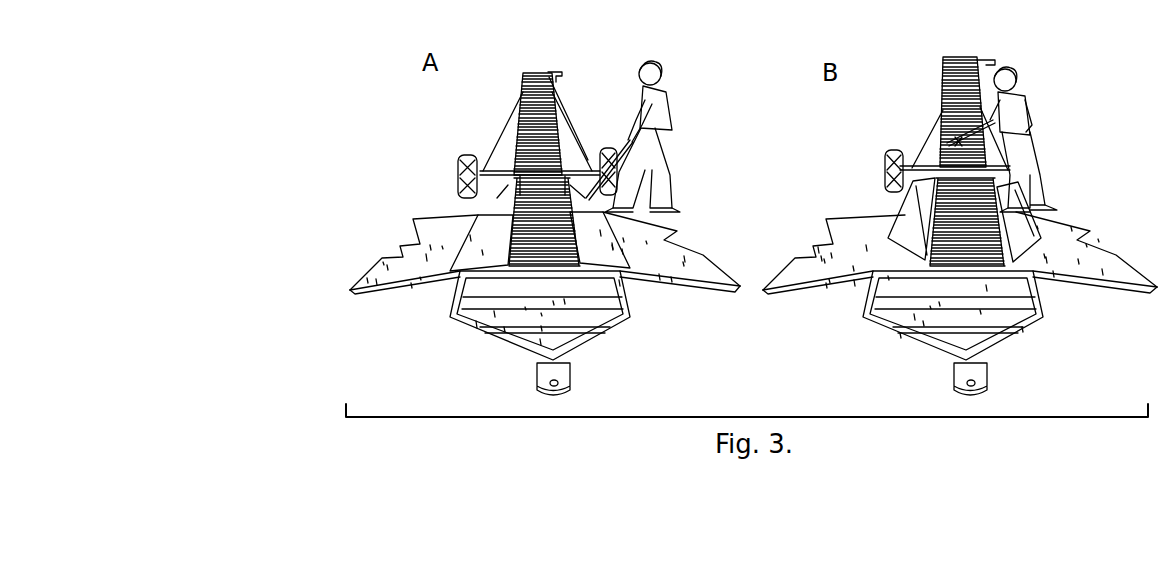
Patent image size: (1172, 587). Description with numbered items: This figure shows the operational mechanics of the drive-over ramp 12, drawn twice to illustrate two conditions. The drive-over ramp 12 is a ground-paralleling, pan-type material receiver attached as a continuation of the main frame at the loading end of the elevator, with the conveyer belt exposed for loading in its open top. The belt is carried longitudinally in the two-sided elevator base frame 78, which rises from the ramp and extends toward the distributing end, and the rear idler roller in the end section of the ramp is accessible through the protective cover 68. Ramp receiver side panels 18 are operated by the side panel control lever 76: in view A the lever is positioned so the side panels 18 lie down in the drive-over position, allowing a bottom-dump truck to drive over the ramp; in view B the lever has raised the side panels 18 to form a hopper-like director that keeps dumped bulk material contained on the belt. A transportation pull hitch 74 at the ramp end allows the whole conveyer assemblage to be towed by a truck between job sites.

The drive-over ramp 12 is at (397, 273).
The ramp receiver side panels 18 is at (480, 213).
The protective cover 68 is at (610, 303).
The transportation pull hitch 74 is at (562, 382).
The side panel control lever 76 is at (625, 143).
The two-sided elevator base frame 78 is at (520, 73).